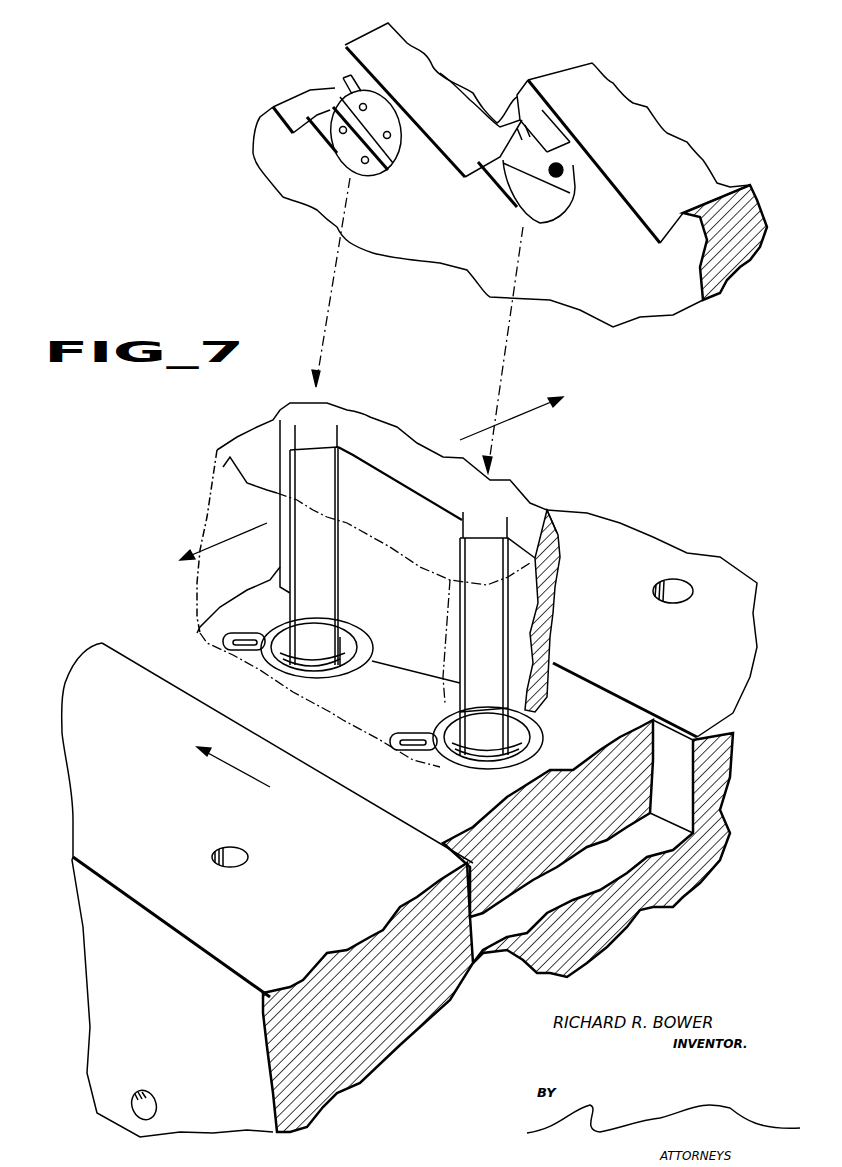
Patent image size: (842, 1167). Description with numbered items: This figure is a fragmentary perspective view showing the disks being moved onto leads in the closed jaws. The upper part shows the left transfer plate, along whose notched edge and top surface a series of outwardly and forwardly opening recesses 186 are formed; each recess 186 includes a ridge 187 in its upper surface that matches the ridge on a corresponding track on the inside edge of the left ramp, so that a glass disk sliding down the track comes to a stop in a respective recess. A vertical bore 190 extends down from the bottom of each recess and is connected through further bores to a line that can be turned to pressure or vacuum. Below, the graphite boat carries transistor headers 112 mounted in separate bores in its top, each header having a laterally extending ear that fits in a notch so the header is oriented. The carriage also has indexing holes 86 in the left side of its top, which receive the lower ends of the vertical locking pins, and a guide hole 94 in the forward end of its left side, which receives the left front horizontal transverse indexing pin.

The recess 186 is at (328, 114).
The ridge 187 is at (345, 80).
The vertical bore 190 is at (560, 168).
The transistor header 112 is at (252, 644).
The indexing hole 86 is at (667, 583).
The guide hole 94 is at (150, 1103).